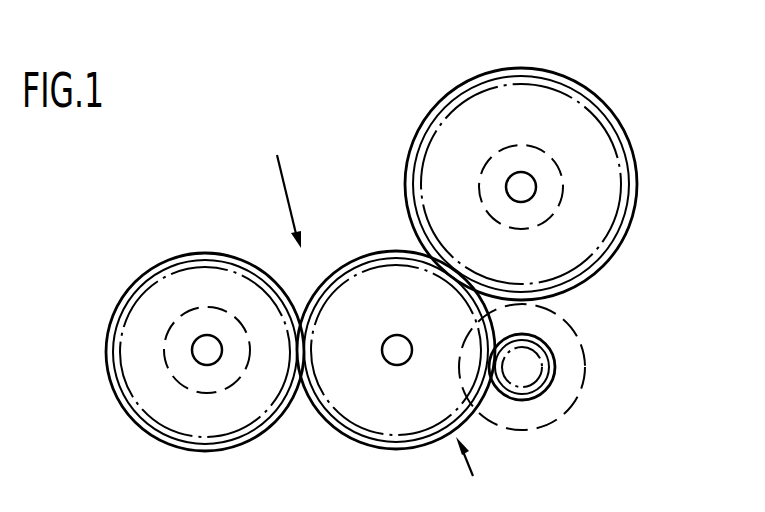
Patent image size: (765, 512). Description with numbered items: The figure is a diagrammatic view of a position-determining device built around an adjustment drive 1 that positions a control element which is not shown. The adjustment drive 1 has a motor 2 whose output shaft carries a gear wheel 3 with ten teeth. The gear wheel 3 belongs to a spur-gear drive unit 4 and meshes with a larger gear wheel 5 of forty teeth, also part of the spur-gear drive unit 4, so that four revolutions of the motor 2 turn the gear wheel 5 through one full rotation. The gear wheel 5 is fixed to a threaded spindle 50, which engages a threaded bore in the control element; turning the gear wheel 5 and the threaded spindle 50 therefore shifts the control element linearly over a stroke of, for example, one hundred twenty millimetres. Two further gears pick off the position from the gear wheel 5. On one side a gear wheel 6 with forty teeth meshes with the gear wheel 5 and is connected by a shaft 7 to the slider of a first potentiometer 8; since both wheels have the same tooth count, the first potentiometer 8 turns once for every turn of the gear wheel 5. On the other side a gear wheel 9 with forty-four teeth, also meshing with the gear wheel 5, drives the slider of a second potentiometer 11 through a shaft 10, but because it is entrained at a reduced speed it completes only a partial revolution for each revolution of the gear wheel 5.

The adjustment drive 1 is at (283, 184).
The motor 2 is at (583, 346).
The gear wheel 3 is at (555, 377).
The spur-gear drive unit 4 is at (471, 472).
The gear wheel 5 is at (340, 432).
The threaded spindle 50 is at (391, 336).
The gear wheel 6 is at (236, 451).
The shaft 7 is at (206, 335).
The first potentiometer 8 is at (178, 322).
The gear wheel 9 is at (548, 68).
The shaft 10 is at (533, 178).
The second potentiometer 11 is at (563, 197).